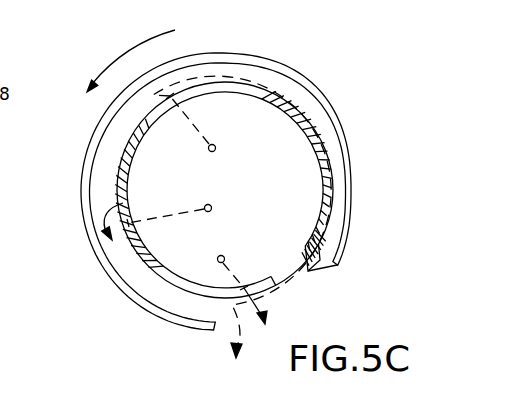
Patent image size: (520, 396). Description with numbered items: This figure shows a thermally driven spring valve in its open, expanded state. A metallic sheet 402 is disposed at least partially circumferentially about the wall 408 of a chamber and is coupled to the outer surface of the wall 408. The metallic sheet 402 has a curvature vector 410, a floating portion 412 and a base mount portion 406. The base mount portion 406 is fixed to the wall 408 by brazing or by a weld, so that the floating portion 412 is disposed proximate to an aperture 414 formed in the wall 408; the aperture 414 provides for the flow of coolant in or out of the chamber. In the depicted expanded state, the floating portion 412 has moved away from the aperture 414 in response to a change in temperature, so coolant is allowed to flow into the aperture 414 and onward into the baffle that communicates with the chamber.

The metallic sheet 402 is at (227, 54).
The base mount portion 406 is at (326, 250).
The wall 408 is at (325, 152).
The curvature vector 410 is at (121, 57).
The floating portion 412 is at (82, 180).
The aperture 414 is at (103, 228).